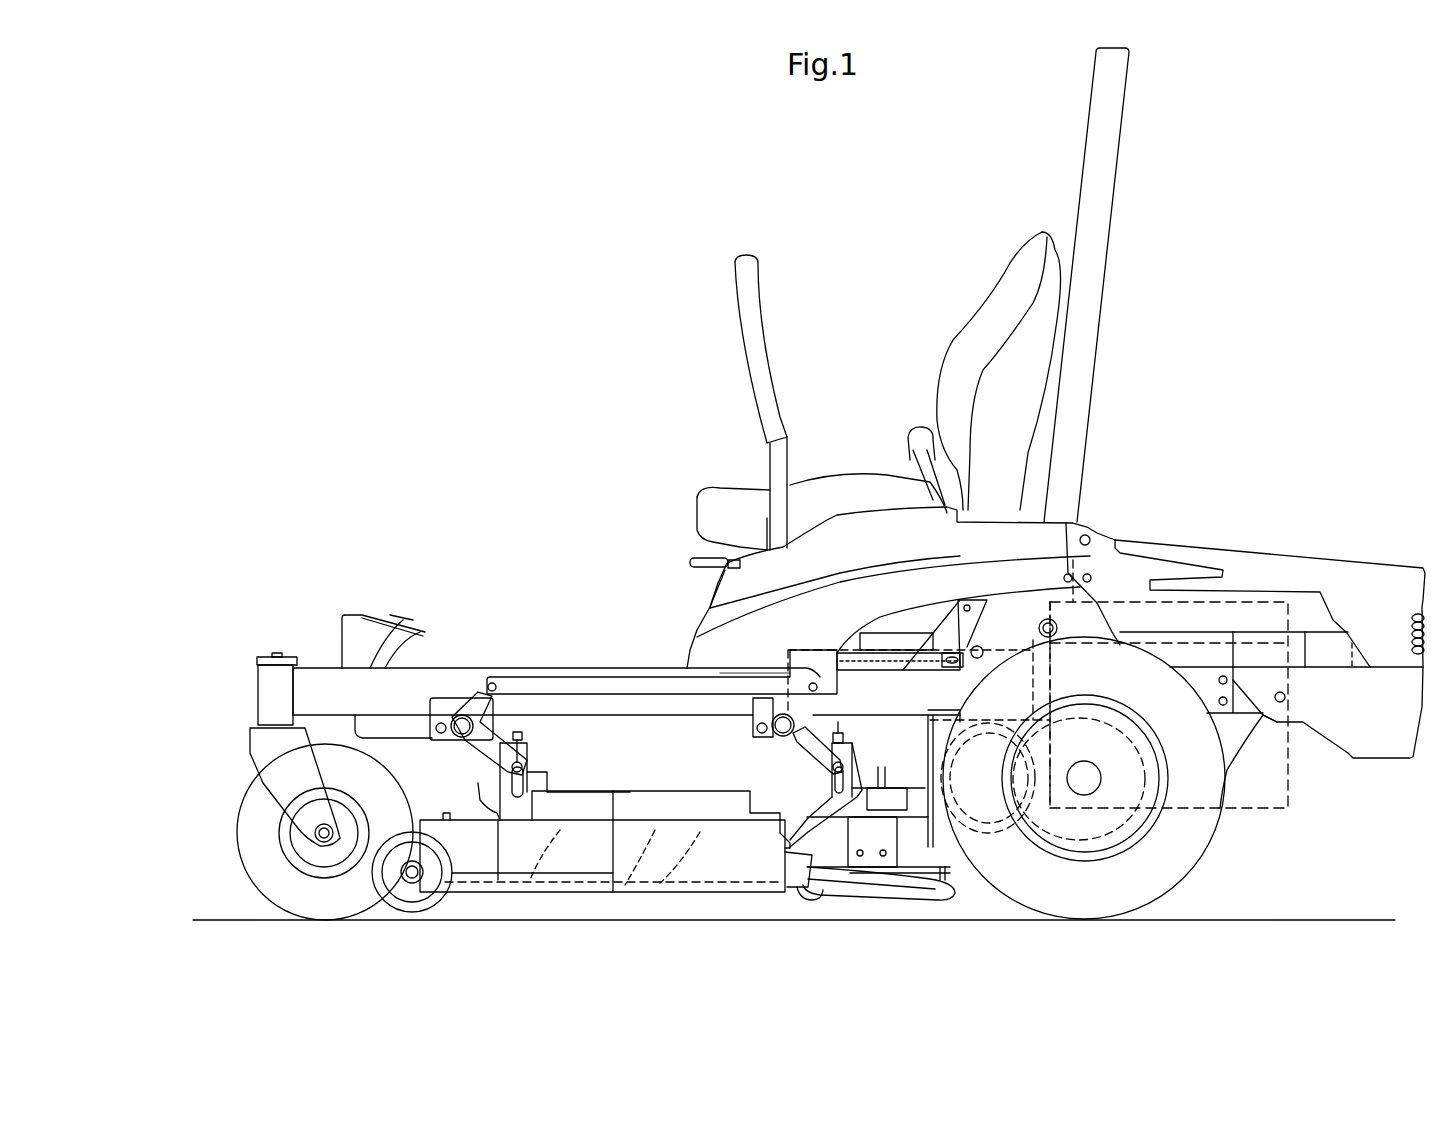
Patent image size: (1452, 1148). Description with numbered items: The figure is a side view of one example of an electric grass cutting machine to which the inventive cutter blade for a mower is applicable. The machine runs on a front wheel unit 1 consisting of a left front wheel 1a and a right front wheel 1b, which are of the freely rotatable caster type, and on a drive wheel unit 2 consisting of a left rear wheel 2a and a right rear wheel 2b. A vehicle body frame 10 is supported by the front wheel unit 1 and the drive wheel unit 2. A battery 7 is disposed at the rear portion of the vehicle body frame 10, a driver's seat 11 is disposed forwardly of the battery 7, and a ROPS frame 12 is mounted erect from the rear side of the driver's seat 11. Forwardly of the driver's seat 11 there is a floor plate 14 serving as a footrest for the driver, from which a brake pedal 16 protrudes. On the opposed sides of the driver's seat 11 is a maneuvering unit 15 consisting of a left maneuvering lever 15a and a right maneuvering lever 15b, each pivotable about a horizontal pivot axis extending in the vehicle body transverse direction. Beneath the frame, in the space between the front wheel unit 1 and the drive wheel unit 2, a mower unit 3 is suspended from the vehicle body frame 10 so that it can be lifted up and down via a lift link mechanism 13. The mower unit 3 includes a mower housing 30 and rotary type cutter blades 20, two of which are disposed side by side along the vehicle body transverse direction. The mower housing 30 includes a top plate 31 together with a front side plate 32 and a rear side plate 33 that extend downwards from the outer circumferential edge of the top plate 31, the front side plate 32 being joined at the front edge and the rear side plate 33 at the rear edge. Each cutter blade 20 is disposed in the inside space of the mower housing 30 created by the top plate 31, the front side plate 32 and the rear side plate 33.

The front wheel unit 1 is at (277, 786).
The left front wheel 1a is at (277, 786).
The right front wheel 1b is at (242, 840).
The drive wheel unit 2 is at (1124, 778).
The left rear wheel 2a is at (1124, 778).
The right rear wheel 2b is at (1207, 832).
The mower unit 3 is at (663, 847).
The battery 7 is at (1282, 797).
The vehicle body frame 10 is at (321, 645).
The driver's seat 11 is at (955, 345).
The ROPS frame 12 is at (1112, 158).
The lift link mechanism 13 is at (475, 685).
The floor plate 14 is at (568, 667).
The maneuvering unit 15 is at (661, 402).
The left maneuvering lever 15a is at (661, 402).
The right maneuvering lever 15b is at (735, 303).
The brake pedal 16 is at (410, 620).
The cutter blade 20 is at (677, 867).
The mower housing 30 is at (675, 812).
The top plate 31 is at (467, 820).
The front side plate 32 is at (475, 853).
The rear side plate 33 is at (753, 883).